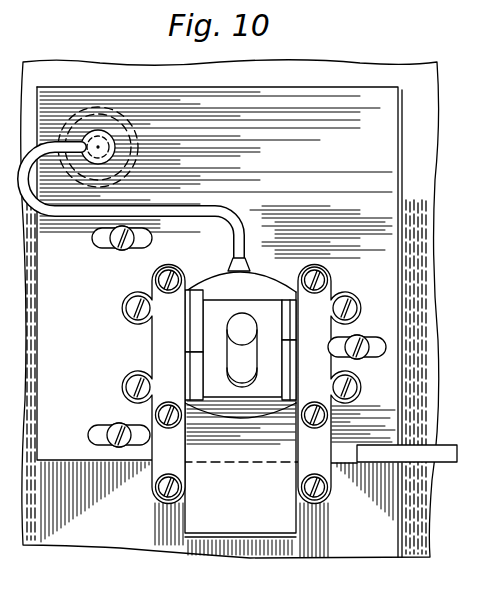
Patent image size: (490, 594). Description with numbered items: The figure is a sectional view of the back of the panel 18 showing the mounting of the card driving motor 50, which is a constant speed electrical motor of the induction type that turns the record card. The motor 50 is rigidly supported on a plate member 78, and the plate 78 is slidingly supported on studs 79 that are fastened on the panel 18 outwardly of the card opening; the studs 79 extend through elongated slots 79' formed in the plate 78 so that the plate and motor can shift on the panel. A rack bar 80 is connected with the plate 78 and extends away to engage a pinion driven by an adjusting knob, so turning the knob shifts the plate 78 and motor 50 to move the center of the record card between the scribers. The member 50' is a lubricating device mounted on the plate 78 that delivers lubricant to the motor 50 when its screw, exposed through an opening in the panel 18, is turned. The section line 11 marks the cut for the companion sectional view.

The section line 11- 11 is at (117, 45).
The panel 18 is at (431, 118).
The plate member 78 is at (388, 163).
The constant speed electrical motor 50 is at (161, 342).
The lubricating device 50' is at (118, 147).
The studs 79 is at (235, 365).
The elongated slots 79' is at (216, 336).
The rack bar 80 is at (441, 446).